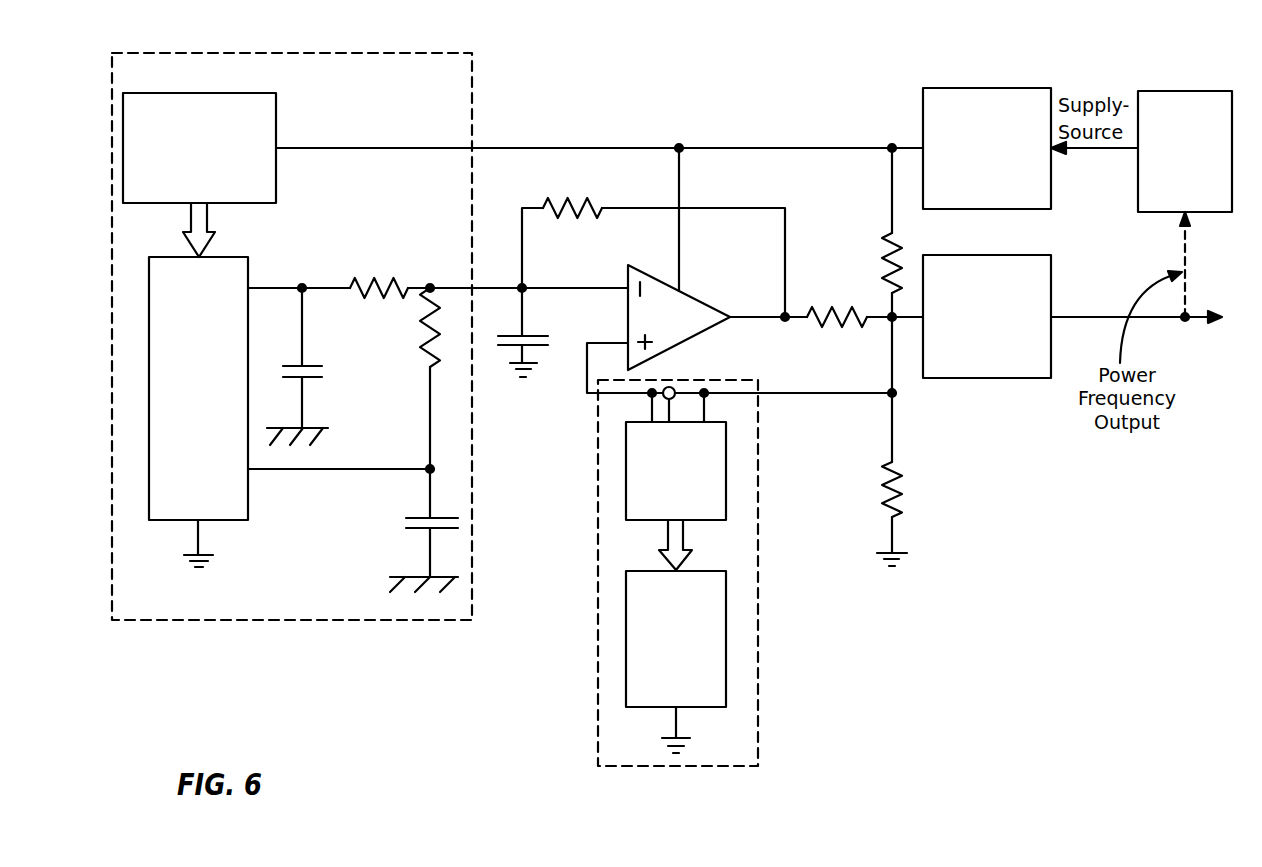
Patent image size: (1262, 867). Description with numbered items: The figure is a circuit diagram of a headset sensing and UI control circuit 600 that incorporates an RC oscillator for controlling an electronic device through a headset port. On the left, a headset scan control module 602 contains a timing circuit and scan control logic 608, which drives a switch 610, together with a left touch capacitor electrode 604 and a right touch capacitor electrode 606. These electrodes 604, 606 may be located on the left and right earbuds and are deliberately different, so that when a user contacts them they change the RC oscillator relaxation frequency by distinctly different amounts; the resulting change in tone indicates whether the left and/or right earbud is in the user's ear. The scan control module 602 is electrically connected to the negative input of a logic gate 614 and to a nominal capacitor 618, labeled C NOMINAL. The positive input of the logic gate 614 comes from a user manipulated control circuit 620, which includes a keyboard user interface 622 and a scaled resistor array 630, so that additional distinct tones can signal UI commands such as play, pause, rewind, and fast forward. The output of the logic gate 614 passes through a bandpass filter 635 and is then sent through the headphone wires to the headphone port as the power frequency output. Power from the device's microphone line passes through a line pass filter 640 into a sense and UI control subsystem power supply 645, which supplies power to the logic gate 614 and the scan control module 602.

The headset sensing and UI control circuit 600 is at (788, 78).
The headset scan control module 602 is at (445, 53).
The left touch capacitor electrode 604 is at (312, 378).
The right touch capacitor electrode 606 is at (415, 530).
The timing circuit and scan control logic 608 is at (276, 118).
The switch 610 is at (224, 257).
The logic gate 614 is at (700, 298).
The nominal capacitor 618 is at (507, 348).
The user manipulated control circuit 620 is at (712, 380).
The keyboard user interface 622 is at (697, 523).
The scaled resistor array 630 is at (697, 710).
The bandpass filter 635 is at (993, 255).
The line pass filter 640 is at (1200, 91).
The sense and UI control subsystem power supply 645 is at (993, 88).